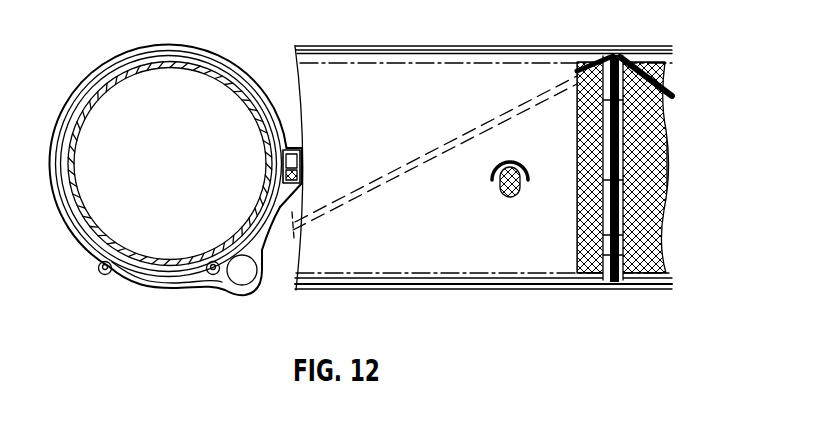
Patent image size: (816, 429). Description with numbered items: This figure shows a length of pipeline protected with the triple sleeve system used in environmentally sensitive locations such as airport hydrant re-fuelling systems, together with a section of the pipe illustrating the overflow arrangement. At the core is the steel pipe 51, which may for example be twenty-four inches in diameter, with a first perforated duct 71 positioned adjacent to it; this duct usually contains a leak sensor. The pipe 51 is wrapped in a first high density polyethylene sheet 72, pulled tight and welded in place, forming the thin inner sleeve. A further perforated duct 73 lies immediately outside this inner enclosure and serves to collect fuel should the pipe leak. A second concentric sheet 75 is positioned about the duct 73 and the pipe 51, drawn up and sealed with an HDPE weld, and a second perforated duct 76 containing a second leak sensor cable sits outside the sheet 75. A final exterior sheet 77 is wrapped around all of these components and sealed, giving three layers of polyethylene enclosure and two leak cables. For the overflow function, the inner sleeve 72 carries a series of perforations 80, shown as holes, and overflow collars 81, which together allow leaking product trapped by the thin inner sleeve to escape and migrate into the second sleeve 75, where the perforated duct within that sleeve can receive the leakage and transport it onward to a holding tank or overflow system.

The steel pipe 51 is at (172, 66).
The first perforated duct 71 is at (211, 260).
The first high density polyethylene sheet 72 is at (444, 280).
The further perforated duct 73 is at (231, 296).
The second concentric sheet 75 is at (484, 286).
The second perforated duct 76 is at (103, 272).
The final exterior sheet 77 is at (526, 292).
The perforations 80 is at (272, 183).
The overflow collars 81 is at (303, 160).